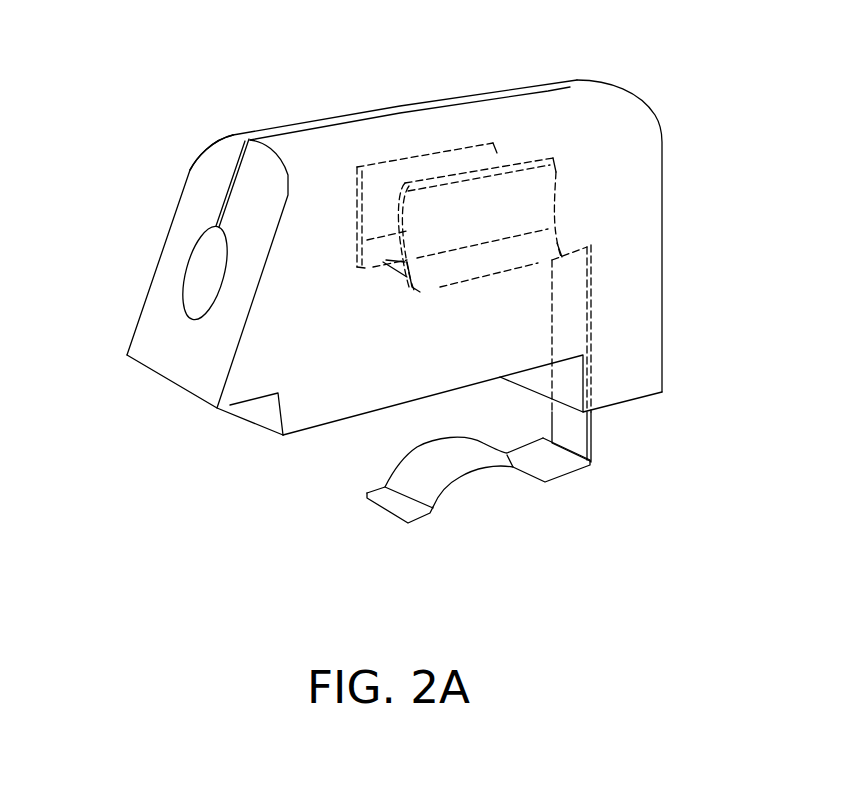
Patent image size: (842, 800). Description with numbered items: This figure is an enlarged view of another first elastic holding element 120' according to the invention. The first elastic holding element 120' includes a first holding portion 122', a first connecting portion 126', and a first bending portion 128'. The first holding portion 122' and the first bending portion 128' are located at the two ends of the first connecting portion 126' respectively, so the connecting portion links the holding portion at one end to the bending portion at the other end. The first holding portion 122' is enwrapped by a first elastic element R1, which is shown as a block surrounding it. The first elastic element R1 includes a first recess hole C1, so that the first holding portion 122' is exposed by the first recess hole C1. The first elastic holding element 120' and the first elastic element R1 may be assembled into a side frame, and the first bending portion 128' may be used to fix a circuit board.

The first elastic element R1 is at (212, 152).
The first recess hole C1 is at (210, 278).
The first elastic holding element 120' is at (574, 333).
The first holding portion 122' is at (544, 220).
The first connecting portion 126' is at (642, 352).
The first bending portion 128' is at (549, 445).